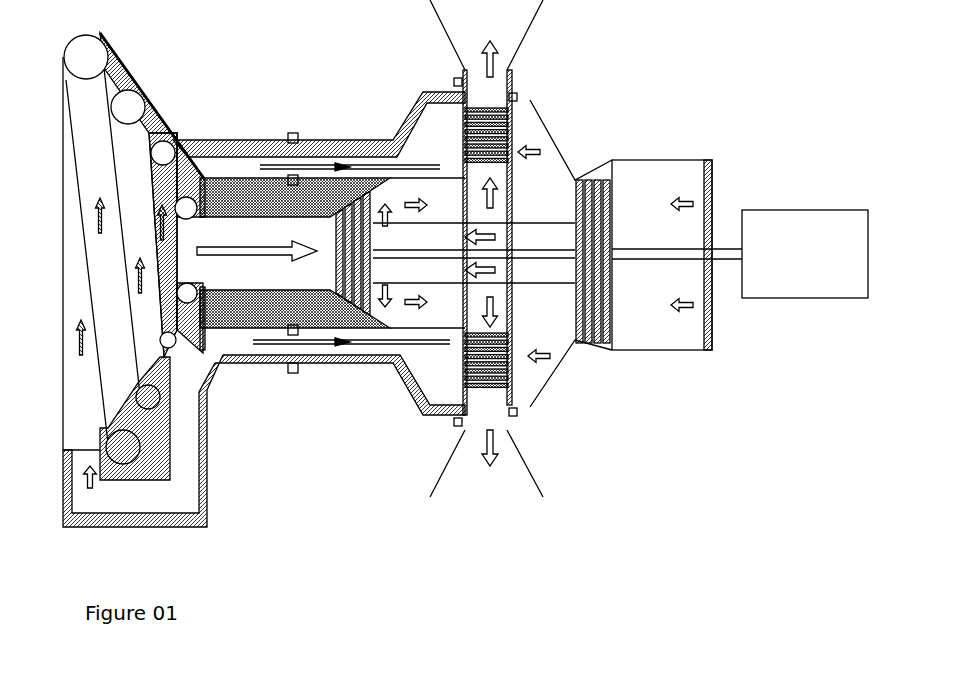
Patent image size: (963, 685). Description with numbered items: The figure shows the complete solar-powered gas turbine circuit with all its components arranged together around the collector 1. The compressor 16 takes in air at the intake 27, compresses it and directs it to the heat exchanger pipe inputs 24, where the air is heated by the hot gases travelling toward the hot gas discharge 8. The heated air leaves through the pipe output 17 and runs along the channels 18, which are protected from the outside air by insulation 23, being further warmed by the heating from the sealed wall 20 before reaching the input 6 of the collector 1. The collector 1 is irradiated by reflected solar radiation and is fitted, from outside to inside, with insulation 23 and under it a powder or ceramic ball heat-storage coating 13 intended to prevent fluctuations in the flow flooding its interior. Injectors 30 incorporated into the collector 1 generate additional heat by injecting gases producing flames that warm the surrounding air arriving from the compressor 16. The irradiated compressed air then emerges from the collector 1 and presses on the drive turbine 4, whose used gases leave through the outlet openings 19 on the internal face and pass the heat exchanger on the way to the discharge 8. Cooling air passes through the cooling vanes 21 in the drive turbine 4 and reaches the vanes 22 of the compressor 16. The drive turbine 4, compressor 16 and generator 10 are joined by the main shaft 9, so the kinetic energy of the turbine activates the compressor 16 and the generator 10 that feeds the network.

The collector 1 is at (62, 266).
The drive turbine 4 is at (346, 178).
The input 6 is at (110, 462).
The hot gas discharge 8 is at (500, 40).
The main shaft 9 is at (723, 260).
The generator 10 is at (802, 298).
The heat-storage ceramic coating 13 is at (182, 200).
The compressor 16 is at (598, 345).
The output of heat exchanger pipes 17 is at (462, 128).
The channels 18 is at (315, 165).
The outlet openings 19 is at (462, 190).
The sealed wall 20 is at (474, 268).
The cooling vanes 21 is at (376, 360).
The vanes of the compressor 22 is at (570, 333).
The insulation 23 is at (238, 140).
The heat exchanger pipe inputs 24 is at (508, 155).
The air intake 27 is at (712, 178).
The injectors 30 is at (202, 287).